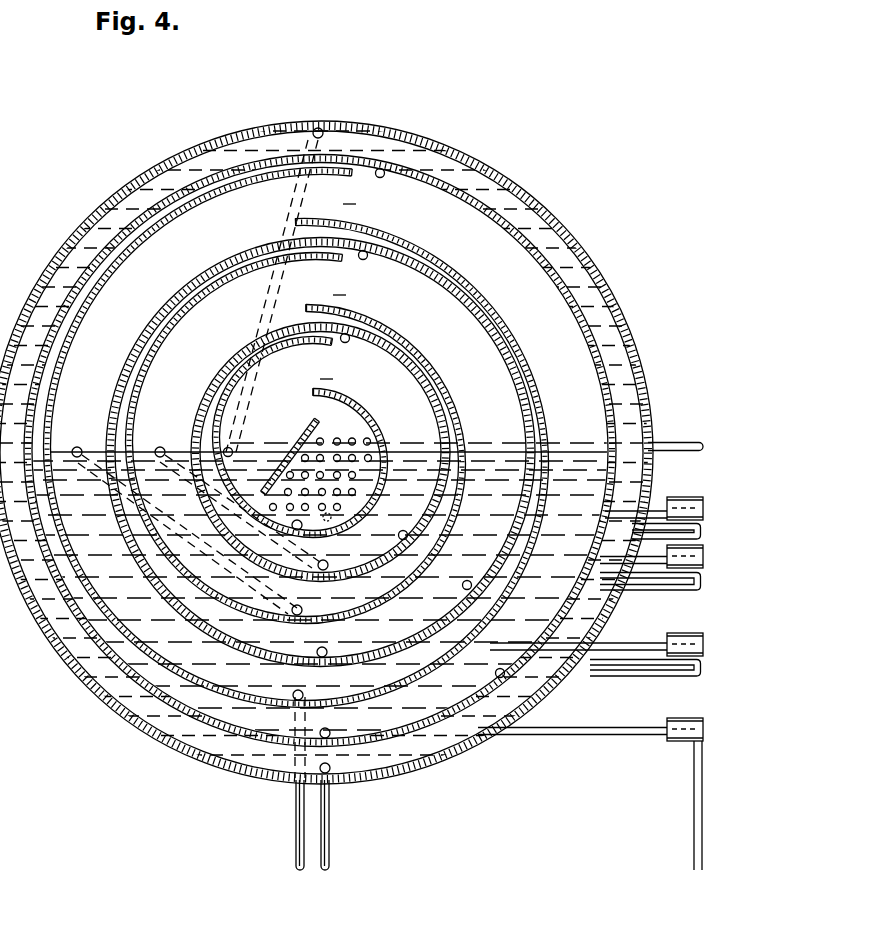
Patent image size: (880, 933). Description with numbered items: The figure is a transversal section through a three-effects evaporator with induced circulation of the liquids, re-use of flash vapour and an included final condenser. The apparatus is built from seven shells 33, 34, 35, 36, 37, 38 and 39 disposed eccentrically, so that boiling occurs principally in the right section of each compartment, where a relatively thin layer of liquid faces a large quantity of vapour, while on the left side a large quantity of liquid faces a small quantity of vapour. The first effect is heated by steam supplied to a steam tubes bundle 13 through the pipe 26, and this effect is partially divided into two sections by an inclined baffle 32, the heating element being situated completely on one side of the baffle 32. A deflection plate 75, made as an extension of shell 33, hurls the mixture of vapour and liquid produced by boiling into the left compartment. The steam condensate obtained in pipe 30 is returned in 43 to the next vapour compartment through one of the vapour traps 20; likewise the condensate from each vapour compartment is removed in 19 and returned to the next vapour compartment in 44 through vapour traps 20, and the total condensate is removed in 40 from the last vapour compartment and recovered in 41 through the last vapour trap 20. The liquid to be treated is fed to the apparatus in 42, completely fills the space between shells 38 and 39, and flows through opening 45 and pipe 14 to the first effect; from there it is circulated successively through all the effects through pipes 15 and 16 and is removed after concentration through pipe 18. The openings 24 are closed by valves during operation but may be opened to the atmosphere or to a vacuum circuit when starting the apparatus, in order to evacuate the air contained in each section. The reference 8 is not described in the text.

The spiral evaporating chamber 8 is at (338, 281).
The steam tubes bundle 13 is at (345, 438).
The pipe 14 is at (260, 320).
The pipe 15 is at (162, 452).
The pipe 16 is at (76, 452).
The pipe 18 is at (295, 863).
The condensate removal point 19 is at (319, 564).
The vapour trap 20 is at (704, 526).
The opening 24 is at (384, 176).
The pipe 26 is at (674, 442).
The pipe 30 is at (648, 513).
The inclined baffle 32 is at (307, 430).
The shell 33 is at (298, 346).
The shell 34 is at (242, 358).
The shell 35 is at (164, 340).
The shell 36 is at (180, 298).
The shell 37 is at (124, 258).
The shell 38 is at (536, 256).
The shell 39 is at (564, 232).
The condensate removal point 40 is at (326, 714).
The condensate recovery point 41 is at (692, 866).
The feed inlet 42 is at (333, 863).
The condensate return point 43 is at (400, 538).
The condensate return point 44 is at (462, 588).
The opening 45 is at (318, 128).
The deflection plate 75 is at (298, 224).